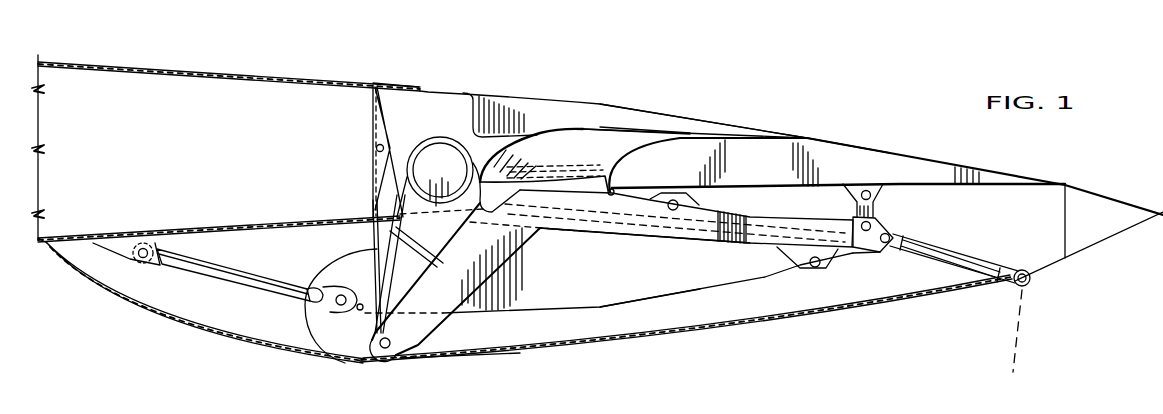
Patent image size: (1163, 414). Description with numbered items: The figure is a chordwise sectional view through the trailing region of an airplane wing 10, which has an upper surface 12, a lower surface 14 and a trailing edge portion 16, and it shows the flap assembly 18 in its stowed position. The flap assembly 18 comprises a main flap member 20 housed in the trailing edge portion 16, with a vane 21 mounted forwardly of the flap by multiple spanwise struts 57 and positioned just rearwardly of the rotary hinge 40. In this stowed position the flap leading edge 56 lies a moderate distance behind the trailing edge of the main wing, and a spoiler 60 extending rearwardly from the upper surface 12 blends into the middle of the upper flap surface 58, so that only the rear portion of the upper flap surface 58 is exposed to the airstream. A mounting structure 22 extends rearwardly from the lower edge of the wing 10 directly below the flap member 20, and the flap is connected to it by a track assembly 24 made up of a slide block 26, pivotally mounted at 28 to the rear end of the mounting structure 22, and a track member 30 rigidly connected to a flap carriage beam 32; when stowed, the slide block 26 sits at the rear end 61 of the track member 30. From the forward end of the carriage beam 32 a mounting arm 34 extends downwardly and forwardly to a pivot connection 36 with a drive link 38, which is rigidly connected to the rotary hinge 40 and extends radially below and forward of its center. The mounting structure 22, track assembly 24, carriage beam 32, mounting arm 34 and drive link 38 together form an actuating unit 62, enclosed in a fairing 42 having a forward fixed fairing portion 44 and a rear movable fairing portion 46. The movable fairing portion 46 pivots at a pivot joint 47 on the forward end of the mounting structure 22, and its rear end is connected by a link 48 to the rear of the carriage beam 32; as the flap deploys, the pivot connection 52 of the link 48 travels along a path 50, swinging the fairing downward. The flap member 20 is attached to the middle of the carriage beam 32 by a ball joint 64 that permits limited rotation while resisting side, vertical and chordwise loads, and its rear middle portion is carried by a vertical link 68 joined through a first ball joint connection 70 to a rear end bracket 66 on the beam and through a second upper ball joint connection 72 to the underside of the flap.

The airplane wing 10 is at (363, 70).
The upper surface 12 is at (262, 70).
The lower surface 14 is at (294, 233).
The trailing edge portion 16 is at (780, 125).
The flap assembly 18 is at (857, 141).
The main flap member 20 is at (871, 199).
The vane 21 is at (520, 133).
The mounting structure 22 is at (623, 300).
The track assembly 24 is at (752, 250).
The slide block 26 is at (818, 272).
The pivot mounting 28 is at (815, 268).
The track member 30 is at (625, 220).
The flap carriage beam 32 is at (755, 222).
The mounting arm 34 is at (500, 268).
The pivot connection 36 is at (390, 351).
The drive link 38 is at (362, 217).
The rotary hinge 40 is at (440, 157).
The fairing 42 is at (512, 358).
The forward fixed fairing portion 44 is at (198, 336).
The rear movable fairing portion 46 is at (667, 340).
The pivot joint 47 is at (352, 362).
The link 48 is at (970, 262).
The path 50 is at (1022, 322).
The pivot connection 52 is at (1028, 283).
The flap leading edge 56 is at (625, 126).
The spanwise struts 57 is at (600, 148).
The upper flap surface 58 is at (828, 142).
The spoiler 60 is at (530, 103).
The rear end 61 is at (868, 256).
The actuating unit 62 is at (570, 324).
The ball joint 64 is at (667, 212).
The rear end bracket 66 is at (893, 240).
The link 68 is at (872, 193).
The first ball joint connection 70 is at (880, 222).
The second upper ball joint connection 72 is at (877, 186).